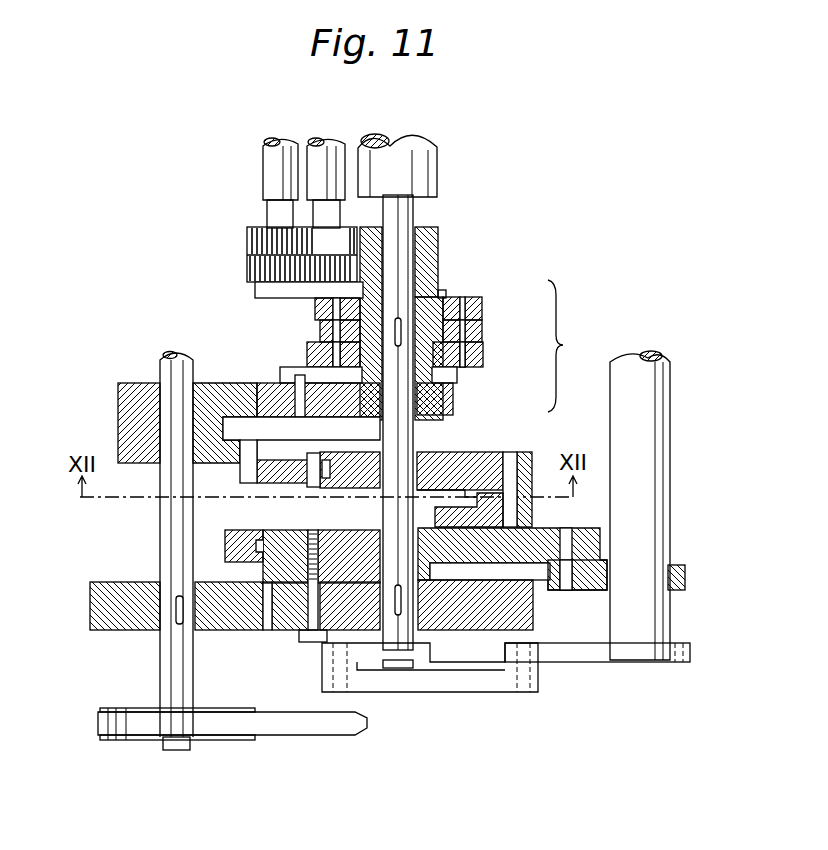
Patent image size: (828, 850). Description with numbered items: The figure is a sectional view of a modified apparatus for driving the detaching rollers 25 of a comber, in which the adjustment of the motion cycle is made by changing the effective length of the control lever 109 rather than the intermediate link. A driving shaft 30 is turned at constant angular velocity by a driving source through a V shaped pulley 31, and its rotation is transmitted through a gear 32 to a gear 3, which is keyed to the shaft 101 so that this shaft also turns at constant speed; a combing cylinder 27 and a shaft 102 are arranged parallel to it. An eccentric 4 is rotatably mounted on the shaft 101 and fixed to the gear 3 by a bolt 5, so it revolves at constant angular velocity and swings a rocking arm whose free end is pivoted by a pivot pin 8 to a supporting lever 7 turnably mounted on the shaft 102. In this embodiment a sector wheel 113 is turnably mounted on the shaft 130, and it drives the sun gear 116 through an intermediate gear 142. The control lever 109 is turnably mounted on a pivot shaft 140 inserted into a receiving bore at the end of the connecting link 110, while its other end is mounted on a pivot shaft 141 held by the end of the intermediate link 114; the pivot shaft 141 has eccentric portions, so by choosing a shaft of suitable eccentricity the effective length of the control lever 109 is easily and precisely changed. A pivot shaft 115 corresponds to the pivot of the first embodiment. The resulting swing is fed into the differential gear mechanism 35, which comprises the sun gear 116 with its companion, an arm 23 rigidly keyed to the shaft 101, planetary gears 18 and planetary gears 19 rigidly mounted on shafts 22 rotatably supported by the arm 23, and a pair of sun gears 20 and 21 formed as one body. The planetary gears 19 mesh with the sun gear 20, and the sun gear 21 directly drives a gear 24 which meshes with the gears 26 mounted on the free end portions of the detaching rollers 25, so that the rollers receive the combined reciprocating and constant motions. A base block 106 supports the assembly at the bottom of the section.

The gear 3 is at (280, 630).
The eccentric 4 is at (272, 530).
The bolt 5 is at (311, 643).
The supporting lever 7 is at (596, 586).
The pivot pin 8 is at (564, 586).
The planetary gears 18 is at (312, 355).
The planetary gears 19 is at (318, 297).
The sun gear 20 is at (447, 300).
The sun gear 21 is at (433, 230).
The shafts 22 is at (336, 333).
The arm 23 is at (420, 300).
The gear 24 is at (250, 273).
The detaching rollers 25 is at (268, 176).
The gears 26 is at (262, 229).
The combing cylinder 27 is at (437, 162).
The driving shaft 30 is at (166, 668).
The V shaped pulley 31 is at (136, 740).
The gear 32 is at (122, 626).
The differential gear mechanism 35 is at (570, 346).
The shaft 101 is at (395, 527).
The shaft 102 is at (660, 428).
The base block 106 is at (480, 590).
The control lever 109 is at (465, 458).
The connecting link 110 is at (532, 515).
The sector wheel 113 is at (126, 405).
The intermediate link 114 is at (276, 474).
The pivot shaft 115 is at (243, 480).
The sun gear 116 is at (452, 398).
The shaft 130 is at (163, 518).
The pivot shaft 140 is at (508, 460).
The pivot shaft 141 is at (315, 458).
The intermediate gear 142 is at (273, 390).